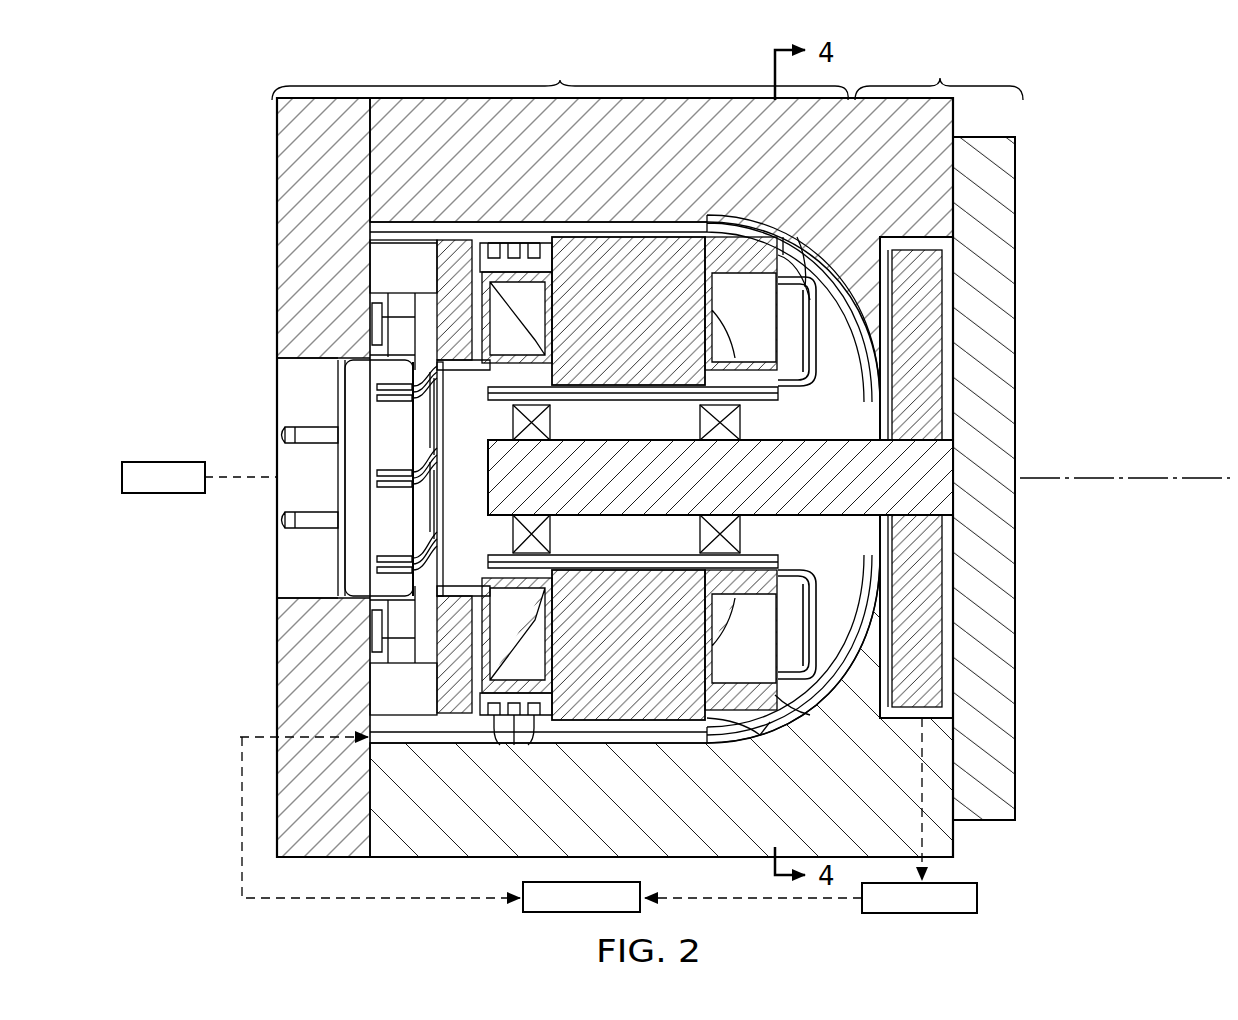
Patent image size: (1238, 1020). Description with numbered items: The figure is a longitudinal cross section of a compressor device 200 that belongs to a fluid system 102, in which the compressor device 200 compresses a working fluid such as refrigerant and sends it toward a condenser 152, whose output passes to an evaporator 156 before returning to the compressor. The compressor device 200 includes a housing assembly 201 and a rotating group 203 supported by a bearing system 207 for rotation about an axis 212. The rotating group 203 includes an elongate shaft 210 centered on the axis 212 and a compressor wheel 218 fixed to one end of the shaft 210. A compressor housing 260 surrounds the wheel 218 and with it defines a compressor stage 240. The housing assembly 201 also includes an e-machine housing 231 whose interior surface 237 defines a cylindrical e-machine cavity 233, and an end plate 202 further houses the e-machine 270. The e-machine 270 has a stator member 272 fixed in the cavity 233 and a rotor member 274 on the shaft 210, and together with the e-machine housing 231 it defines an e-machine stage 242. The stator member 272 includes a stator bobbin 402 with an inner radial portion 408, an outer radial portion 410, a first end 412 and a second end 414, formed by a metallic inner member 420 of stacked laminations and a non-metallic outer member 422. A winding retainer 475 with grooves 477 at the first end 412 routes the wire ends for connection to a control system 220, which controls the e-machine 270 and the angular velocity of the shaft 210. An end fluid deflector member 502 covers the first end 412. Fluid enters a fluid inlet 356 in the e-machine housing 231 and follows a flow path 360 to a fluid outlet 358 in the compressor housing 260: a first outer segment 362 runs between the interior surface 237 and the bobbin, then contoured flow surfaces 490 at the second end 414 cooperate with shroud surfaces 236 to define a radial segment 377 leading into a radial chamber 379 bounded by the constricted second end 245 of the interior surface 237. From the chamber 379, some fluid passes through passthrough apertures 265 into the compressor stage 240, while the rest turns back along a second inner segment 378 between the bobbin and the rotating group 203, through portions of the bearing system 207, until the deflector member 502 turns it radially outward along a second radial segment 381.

The compressor device 200 is at (178, 122).
The housing assembly 201 is at (458, 132).
The e-machine housing 231 is at (472, 100).
The e-machine stage 242 is at (560, 70).
The compressor stage 240 is at (939, 70).
The end plate 202 is at (277, 250).
The e-machine cavity 233 is at (370, 222).
The first end 412 is at (460, 256).
The stator bobbin 402 is at (512, 256).
The outer radial portion 410 is at (548, 240).
The interior surface 237 is at (624, 228).
The stator member 272 is at (652, 234).
The e-machine 270 is at (670, 268).
The outer member 422 is at (756, 262).
The second end 414 is at (805, 295).
The compressor wheel 218 is at (890, 262).
The compressor housing 260 is at (945, 200).
The control system 220 is at (160, 462).
The rotor member 274 is at (570, 395).
The rotating group 203 is at (675, 434).
The inner member 420 is at (620, 398).
The inner radial portion 408 is at (760, 396).
The shaft 210 is at (826, 442).
The axis 212 is at (1092, 477).
The second radial segment 381 is at (462, 582).
The radial chamber 379 is at (852, 559).
The bearing system 207 is at (538, 532).
The second inner segment 378 is at (608, 532).
The radial segment 377 is at (752, 625).
The winding retainer 475 is at (535, 695).
The constricted second end 245 is at (880, 598).
The passthrough aperture 265 is at (885, 610).
The end fluid deflector member 502 is at (440, 674).
The fluid inlet 356 is at (370, 736).
The groove 477 is at (510, 749).
The first outer segment 362 is at (586, 738).
The flow path 360 is at (665, 745).
The contoured flow surface 490 is at (732, 728).
The shroud surface 236 is at (785, 725).
The fluid outlet 358 is at (922, 760).
The fluid system 102 is at (278, 908).
The evaporator 156 is at (523, 905).
The condenser 152 is at (980, 898).